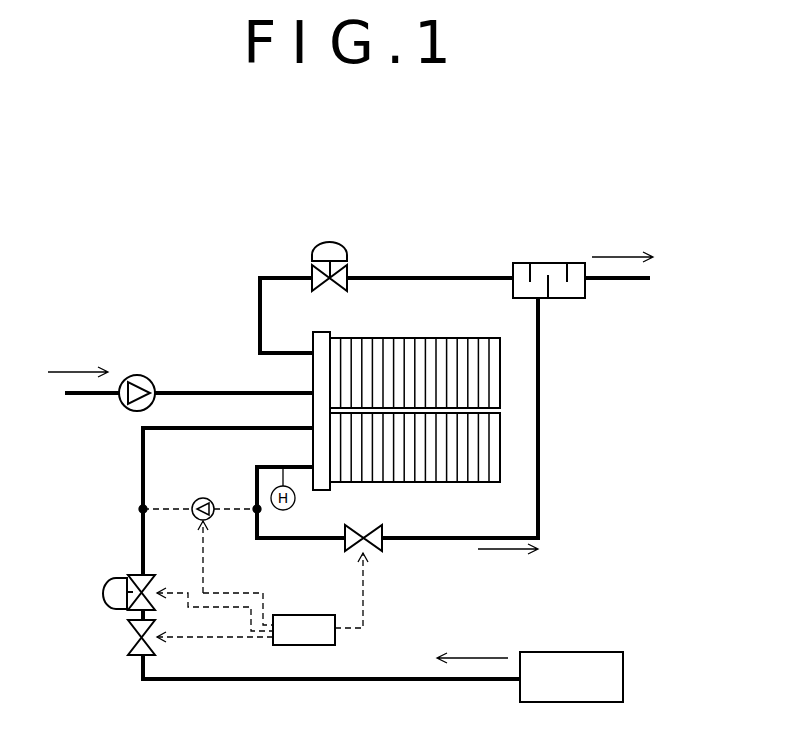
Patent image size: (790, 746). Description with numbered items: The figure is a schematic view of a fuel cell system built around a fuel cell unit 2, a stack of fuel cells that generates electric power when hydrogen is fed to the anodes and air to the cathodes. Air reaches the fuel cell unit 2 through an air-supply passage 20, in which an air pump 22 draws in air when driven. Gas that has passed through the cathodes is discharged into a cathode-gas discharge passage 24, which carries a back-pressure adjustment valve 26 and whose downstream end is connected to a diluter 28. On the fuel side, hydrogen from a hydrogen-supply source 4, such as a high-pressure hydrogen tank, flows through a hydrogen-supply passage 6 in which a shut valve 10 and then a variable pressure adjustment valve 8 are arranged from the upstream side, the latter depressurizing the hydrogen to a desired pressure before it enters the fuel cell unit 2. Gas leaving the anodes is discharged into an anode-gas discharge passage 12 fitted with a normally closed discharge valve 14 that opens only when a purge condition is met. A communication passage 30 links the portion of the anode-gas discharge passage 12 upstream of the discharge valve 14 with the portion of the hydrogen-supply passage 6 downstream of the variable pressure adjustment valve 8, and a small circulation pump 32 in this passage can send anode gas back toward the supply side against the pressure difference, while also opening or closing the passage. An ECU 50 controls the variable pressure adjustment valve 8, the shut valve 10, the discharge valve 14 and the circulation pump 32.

The fuel cell unit 2 is at (411, 337).
The hydrogen-supply source 4 is at (573, 652).
The hydrogen-supply passage 6 is at (213, 682).
The variable pressure adjustment valve 8 is at (106, 594).
The shut valve 10 is at (128, 637).
The anode-gas discharge passage 12 is at (300, 540).
The discharge valve 14 is at (355, 552).
The air-supply passage 20 is at (200, 391).
The air pump 22 is at (138, 375).
The cathode-gas discharge passage 24 is at (410, 277).
The back-pressure adjustment valve 26 is at (327, 241).
The diluter 28 is at (543, 263).
The communication passage 30 is at (230, 511).
The circulation pump 32 is at (204, 498).
The ECU 50 is at (335, 640).